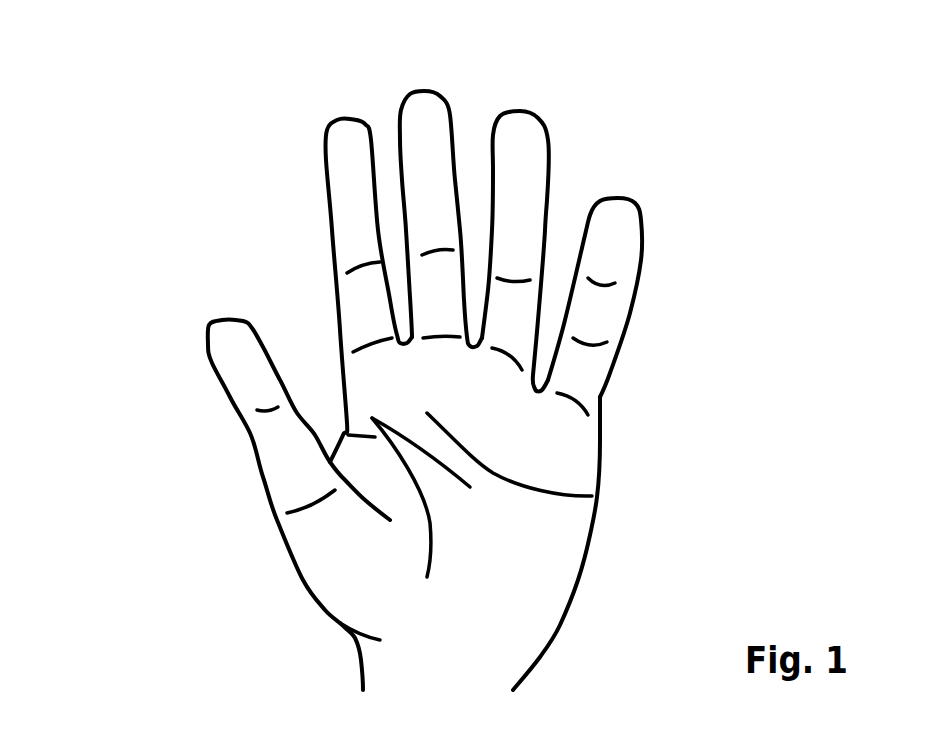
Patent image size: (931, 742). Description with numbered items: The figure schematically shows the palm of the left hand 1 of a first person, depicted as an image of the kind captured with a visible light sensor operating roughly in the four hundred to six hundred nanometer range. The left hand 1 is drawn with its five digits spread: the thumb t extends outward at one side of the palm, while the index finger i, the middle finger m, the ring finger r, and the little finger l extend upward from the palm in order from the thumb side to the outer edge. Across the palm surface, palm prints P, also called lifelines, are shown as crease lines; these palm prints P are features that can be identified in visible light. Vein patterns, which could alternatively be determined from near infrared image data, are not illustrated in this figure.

The left hand 1 is at (188, 483).
The thumb t is at (190, 317).
The index finger i is at (323, 127).
The middle finger m is at (402, 92).
The ring finger r is at (525, 98).
The little finger l is at (617, 185).
The palm prints P is at (375, 400).